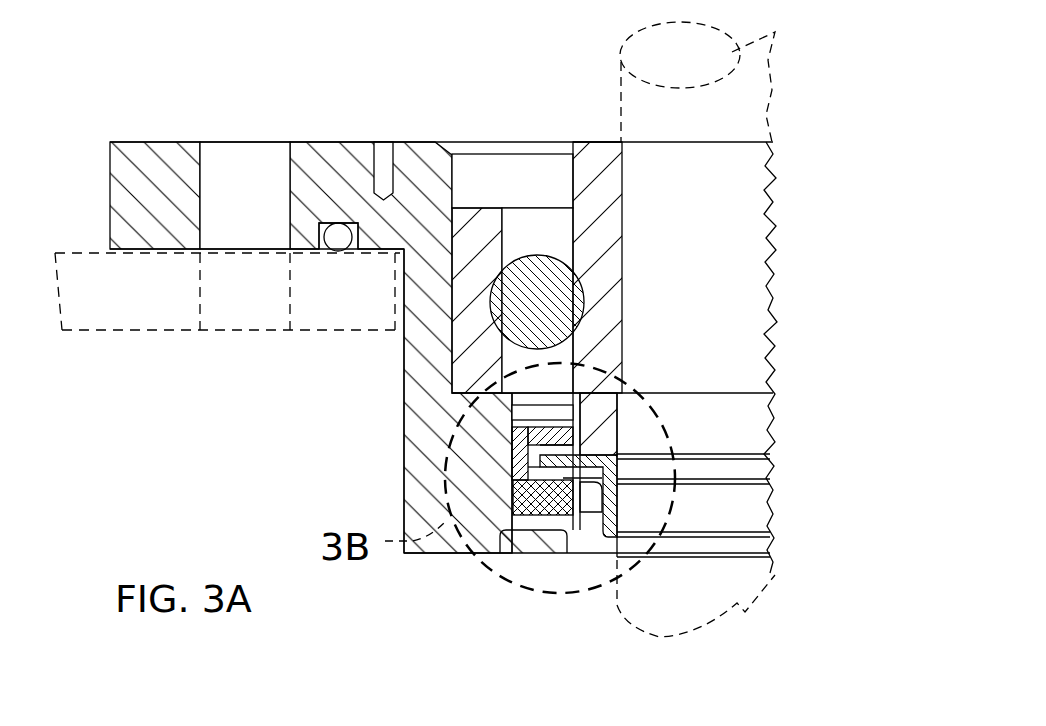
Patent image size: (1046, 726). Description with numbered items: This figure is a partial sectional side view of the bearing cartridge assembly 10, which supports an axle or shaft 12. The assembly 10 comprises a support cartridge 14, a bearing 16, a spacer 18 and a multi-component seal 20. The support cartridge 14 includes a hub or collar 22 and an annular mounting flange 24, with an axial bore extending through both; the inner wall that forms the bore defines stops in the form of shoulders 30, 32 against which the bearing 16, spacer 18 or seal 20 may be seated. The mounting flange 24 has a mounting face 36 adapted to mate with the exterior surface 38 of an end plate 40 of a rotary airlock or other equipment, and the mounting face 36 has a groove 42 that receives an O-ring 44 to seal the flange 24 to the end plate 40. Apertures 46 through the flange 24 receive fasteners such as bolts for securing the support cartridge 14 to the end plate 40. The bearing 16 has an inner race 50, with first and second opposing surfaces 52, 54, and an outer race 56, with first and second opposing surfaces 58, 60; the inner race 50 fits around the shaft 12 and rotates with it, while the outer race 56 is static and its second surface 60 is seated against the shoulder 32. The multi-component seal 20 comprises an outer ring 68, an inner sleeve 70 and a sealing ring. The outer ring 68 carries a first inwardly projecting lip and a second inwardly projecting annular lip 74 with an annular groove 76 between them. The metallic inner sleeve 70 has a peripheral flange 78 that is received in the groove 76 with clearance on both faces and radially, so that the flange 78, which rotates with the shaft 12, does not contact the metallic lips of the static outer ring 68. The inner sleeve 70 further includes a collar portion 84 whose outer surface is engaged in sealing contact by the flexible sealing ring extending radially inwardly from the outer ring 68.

The bearing cartridge assembly 10 is at (812, 145).
The shaft 12 is at (782, 75).
The support cartridge 14 is at (332, 140).
The bearing 16 is at (524, 205).
The spacer 18 is at (604, 428).
The multi-component seal 20 is at (505, 460).
The collar 22 is at (404, 377).
The annular mounting flange 24 is at (112, 152).
The shoulder 30 is at (564, 478).
The shoulder 32 is at (456, 393).
The mounting face 36 is at (158, 253).
The exterior surface 38 is at (82, 253).
The end plate 40 is at (95, 333).
The groove 42 is at (318, 233).
The O-ring 44 is at (338, 251).
The apertures 46 is at (245, 155).
The inner race 50 is at (607, 220).
The first surface of inner race 52 is at (595, 140).
The second surface of inner race 54 is at (618, 402).
The outer race 56 is at (483, 242).
The first surface of outer race 58 is at (485, 208).
The second surface of outer race 60 is at (492, 400).
The outer ring 68 is at (508, 490).
The inner sleeve 70 is at (766, 508).
The second inwardly projecting annular lip 74 is at (581, 480).
The annular groove 76 is at (536, 457).
The peripheral flange 78 is at (556, 470).
The collar portion 84 is at (613, 497).